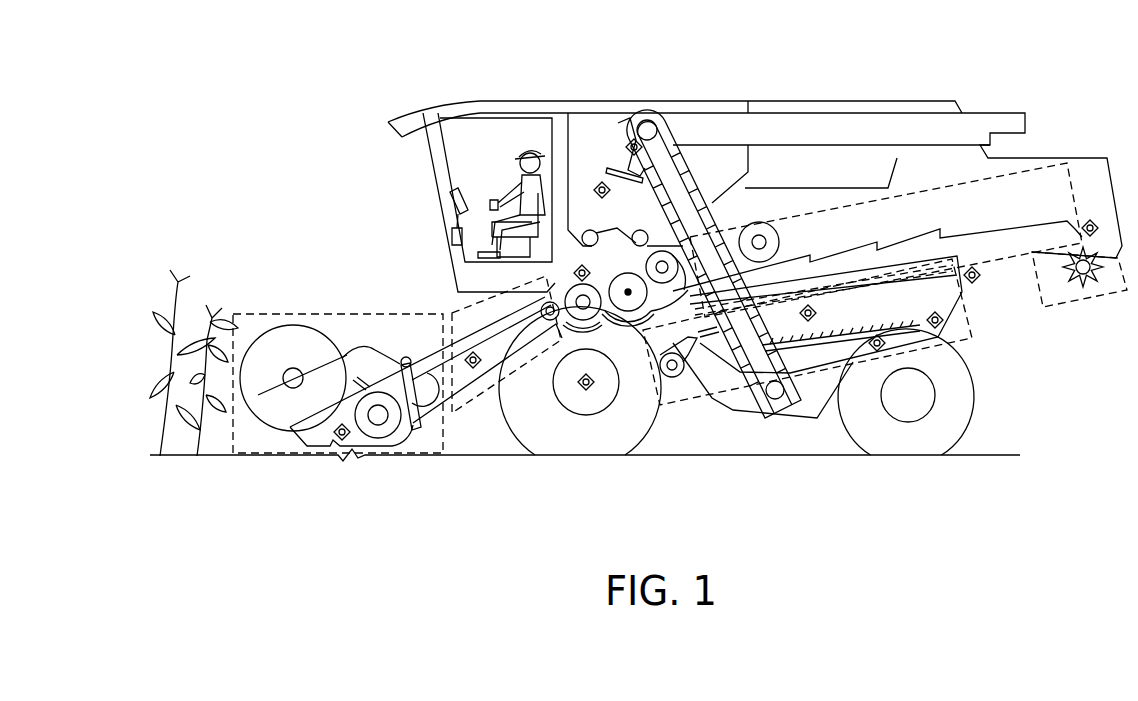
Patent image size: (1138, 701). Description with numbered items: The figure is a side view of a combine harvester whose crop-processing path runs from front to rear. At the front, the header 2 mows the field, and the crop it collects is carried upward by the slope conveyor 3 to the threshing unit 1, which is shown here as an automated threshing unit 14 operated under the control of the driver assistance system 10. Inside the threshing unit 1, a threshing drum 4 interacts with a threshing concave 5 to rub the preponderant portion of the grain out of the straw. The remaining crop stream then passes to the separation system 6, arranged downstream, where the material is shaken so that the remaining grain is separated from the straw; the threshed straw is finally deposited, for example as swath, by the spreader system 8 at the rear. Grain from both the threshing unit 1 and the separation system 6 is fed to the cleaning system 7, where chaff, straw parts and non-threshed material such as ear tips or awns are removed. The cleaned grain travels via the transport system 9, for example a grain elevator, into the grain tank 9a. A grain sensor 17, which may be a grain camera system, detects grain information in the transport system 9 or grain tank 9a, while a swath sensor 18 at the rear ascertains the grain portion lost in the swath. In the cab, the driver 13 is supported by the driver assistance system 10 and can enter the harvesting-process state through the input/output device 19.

The threshing unit 1 is at (567, 272).
The header 2 is at (288, 312).
The slope conveyor 3 is at (481, 397).
The threshing drum 4 is at (630, 292).
The threshing concave 5 is at (673, 370).
The separation system 6 is at (925, 190).
The cleaning system 7 is at (967, 317).
The spreader system 8 is at (1063, 303).
The transport system 9 is at (718, 222).
The grain tank 9a is at (606, 134).
The driver assistance system 10 is at (452, 232).
The driver 13 is at (527, 148).
The automated threshing unit 14 is at (614, 332).
The grain sensor 17 is at (598, 182).
The swath sensor 18 is at (1098, 222).
The input/output device 19 is at (452, 195).